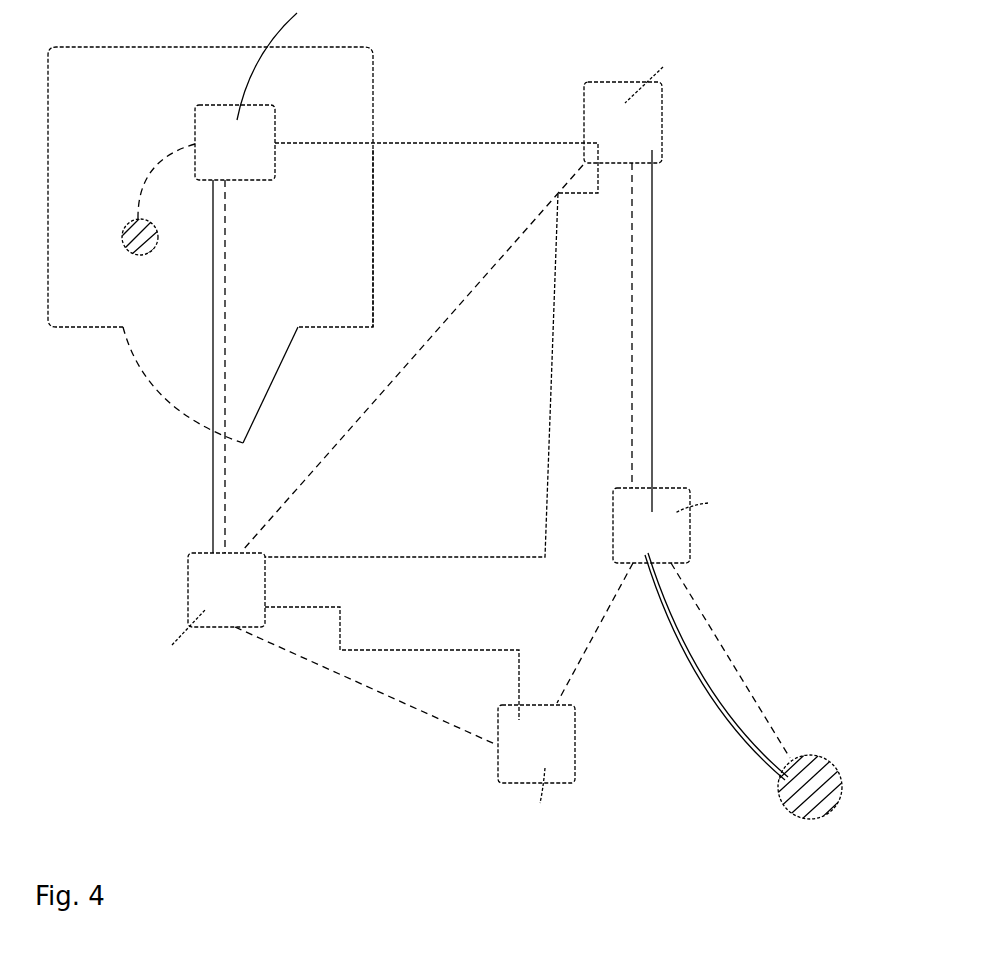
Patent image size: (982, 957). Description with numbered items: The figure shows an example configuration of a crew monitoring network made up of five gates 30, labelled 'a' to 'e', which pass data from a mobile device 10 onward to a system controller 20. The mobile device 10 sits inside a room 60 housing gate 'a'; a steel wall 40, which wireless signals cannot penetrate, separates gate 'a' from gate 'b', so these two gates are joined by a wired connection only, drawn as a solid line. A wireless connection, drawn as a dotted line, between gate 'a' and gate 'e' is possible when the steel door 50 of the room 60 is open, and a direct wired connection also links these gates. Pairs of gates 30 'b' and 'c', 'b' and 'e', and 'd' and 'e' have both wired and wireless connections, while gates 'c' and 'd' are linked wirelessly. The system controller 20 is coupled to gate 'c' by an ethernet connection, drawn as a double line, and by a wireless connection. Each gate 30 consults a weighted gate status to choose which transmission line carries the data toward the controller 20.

The mobile device 10 is at (142, 255).
The system controller 20 is at (838, 772).
The gates 30 is at (262, 118).
The steel wall 40 is at (373, 228).
The steel door 50 is at (277, 373).
The room 60 is at (358, 102).